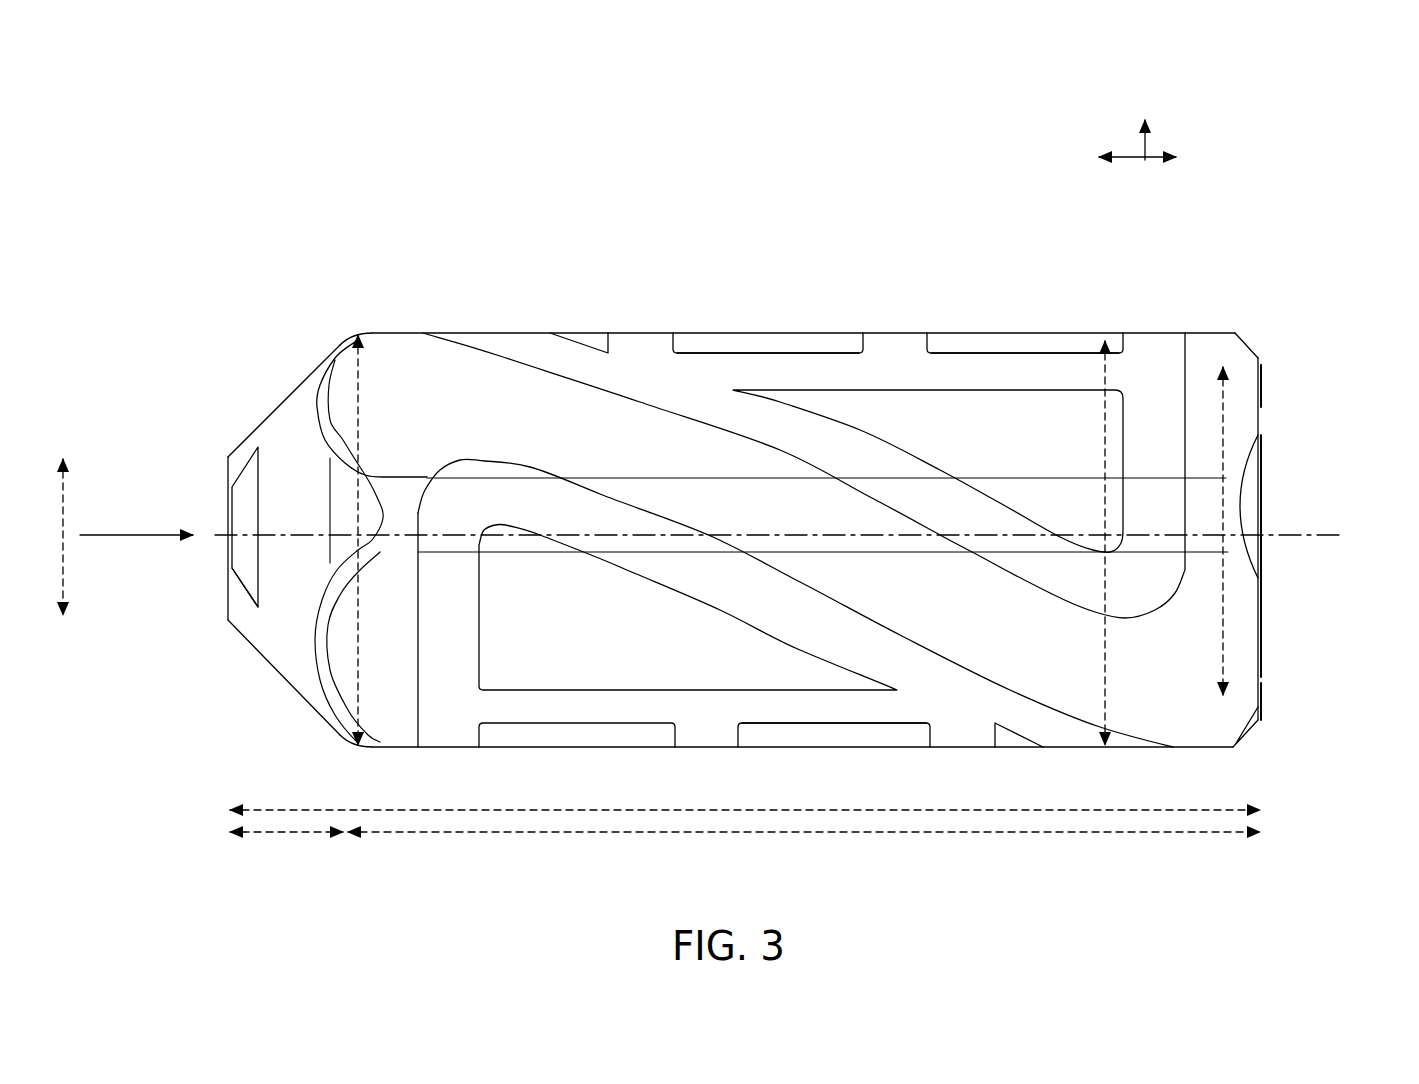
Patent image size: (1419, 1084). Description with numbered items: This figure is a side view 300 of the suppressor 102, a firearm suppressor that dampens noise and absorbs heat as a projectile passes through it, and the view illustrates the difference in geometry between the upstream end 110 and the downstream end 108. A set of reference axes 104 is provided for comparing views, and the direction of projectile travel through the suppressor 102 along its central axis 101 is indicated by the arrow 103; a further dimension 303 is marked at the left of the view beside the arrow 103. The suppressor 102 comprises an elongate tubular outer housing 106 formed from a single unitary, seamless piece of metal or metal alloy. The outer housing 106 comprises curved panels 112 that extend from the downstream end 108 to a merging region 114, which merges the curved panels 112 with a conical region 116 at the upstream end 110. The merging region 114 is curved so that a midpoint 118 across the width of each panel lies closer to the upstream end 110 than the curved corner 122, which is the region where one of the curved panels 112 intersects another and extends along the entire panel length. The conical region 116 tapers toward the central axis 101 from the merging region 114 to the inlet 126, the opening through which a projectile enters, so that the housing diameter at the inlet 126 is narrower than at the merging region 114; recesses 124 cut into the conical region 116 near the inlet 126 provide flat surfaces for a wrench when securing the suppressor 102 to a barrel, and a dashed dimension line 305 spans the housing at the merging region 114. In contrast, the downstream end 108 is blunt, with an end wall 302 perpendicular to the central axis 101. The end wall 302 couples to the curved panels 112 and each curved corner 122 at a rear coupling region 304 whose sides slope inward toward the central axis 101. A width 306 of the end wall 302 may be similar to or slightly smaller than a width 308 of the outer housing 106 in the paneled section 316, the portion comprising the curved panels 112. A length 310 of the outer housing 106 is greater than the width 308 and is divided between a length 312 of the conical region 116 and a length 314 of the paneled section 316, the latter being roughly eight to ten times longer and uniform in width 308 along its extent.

The side view 300 is at (203, 194).
The suppressor 102 is at (376, 215).
The upstream end 110 is at (652, 495).
The merging region 114 is at (343, 326).
The conical region 116 is at (286, 437).
The midpoint 118 is at (328, 418).
The curved corner 122 is at (367, 523).
The recesses 124 is at (245, 562).
The inlet 126 is at (226, 556).
The outer housing 106 is at (594, 298).
The curved panels 112 is at (836, 346).
The paneled section 316 is at (1000, 300).
The downstream end 108 is at (1305, 509).
The rear coupling region 304 is at (1240, 335).
The end wall 302 is at (1262, 455).
The width of the end wall 306 is at (1223, 646).
The width of the outer housing 308 is at (1104, 698).
The inlet diameter 305 is at (360, 645).
The length of the outer housing 310 is at (415, 810).
The length of the conical region 312 is at (290, 834).
The length of the paneled section 314 is at (528, 834).
The inlet flow height 303 is at (63, 572).
The arrow 103 is at (130, 534).
The central axis 101 is at (1325, 535).
The set of reference axes 104 is at (1175, 125).